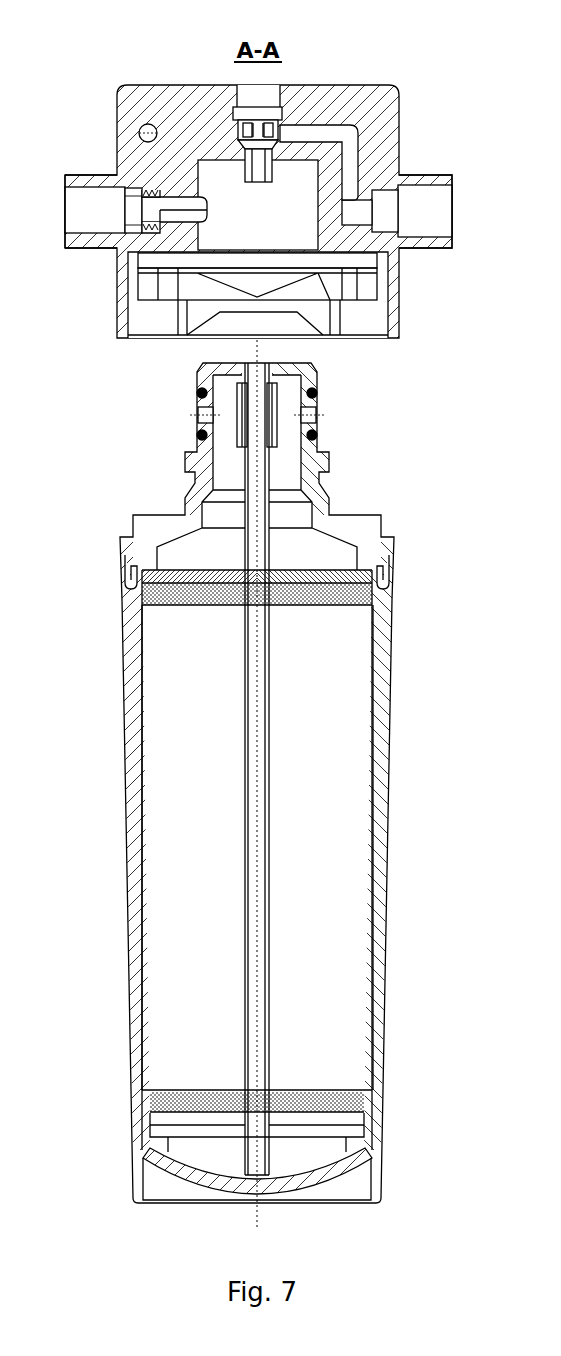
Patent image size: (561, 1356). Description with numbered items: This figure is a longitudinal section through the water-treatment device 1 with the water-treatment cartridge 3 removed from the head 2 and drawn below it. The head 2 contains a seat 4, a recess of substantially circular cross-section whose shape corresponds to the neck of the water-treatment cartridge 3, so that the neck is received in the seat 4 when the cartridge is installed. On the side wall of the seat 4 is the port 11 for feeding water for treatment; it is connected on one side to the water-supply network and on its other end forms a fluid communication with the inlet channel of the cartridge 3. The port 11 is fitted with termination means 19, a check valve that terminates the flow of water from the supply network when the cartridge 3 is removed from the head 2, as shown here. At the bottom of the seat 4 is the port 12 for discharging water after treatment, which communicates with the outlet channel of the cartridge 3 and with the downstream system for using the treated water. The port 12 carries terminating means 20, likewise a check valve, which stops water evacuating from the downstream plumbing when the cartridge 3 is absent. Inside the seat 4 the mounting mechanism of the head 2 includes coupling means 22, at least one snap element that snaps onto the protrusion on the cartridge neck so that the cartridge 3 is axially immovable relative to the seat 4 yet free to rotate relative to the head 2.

The water-treatment device 1 is at (423, 50).
The head 2 is at (112, 87).
The water-treatment cartridge 3 is at (117, 717).
The seat 4 is at (302, 230).
The port for feeding water 11 is at (74, 250).
The port for discharging water 12 is at (441, 177).
The termination means 19 is at (208, 213).
The terminating means 20 is at (268, 181).
The coupling means 22 is at (180, 302).